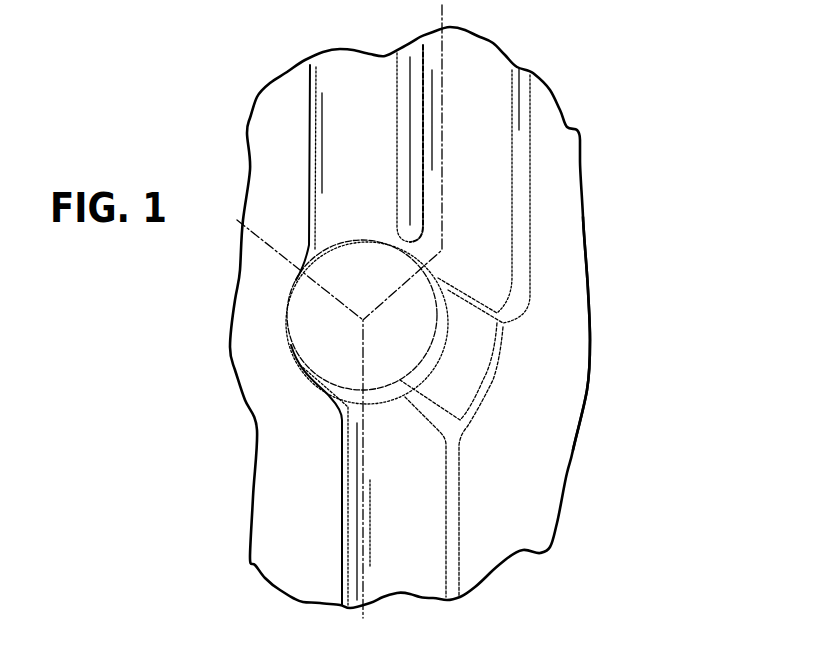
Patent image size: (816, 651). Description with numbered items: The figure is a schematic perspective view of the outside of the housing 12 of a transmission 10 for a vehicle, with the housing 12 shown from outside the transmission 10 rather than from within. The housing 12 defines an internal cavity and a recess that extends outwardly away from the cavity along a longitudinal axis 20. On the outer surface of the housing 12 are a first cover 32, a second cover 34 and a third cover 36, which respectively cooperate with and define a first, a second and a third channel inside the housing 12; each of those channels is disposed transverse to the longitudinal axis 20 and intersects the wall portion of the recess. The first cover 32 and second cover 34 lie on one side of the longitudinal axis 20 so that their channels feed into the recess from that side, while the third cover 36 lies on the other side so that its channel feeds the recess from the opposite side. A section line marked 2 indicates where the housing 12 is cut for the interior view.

The transmission 10 is at (640, 209).
The housing 12 is at (548, 390).
The longitudinal axis 20 is at (262, 262).
The first cover 32 is at (497, 110).
The second cover 34 is at (330, 113).
The third cover 36 is at (406, 568).
The section line 2- 2 is at (442, 6).